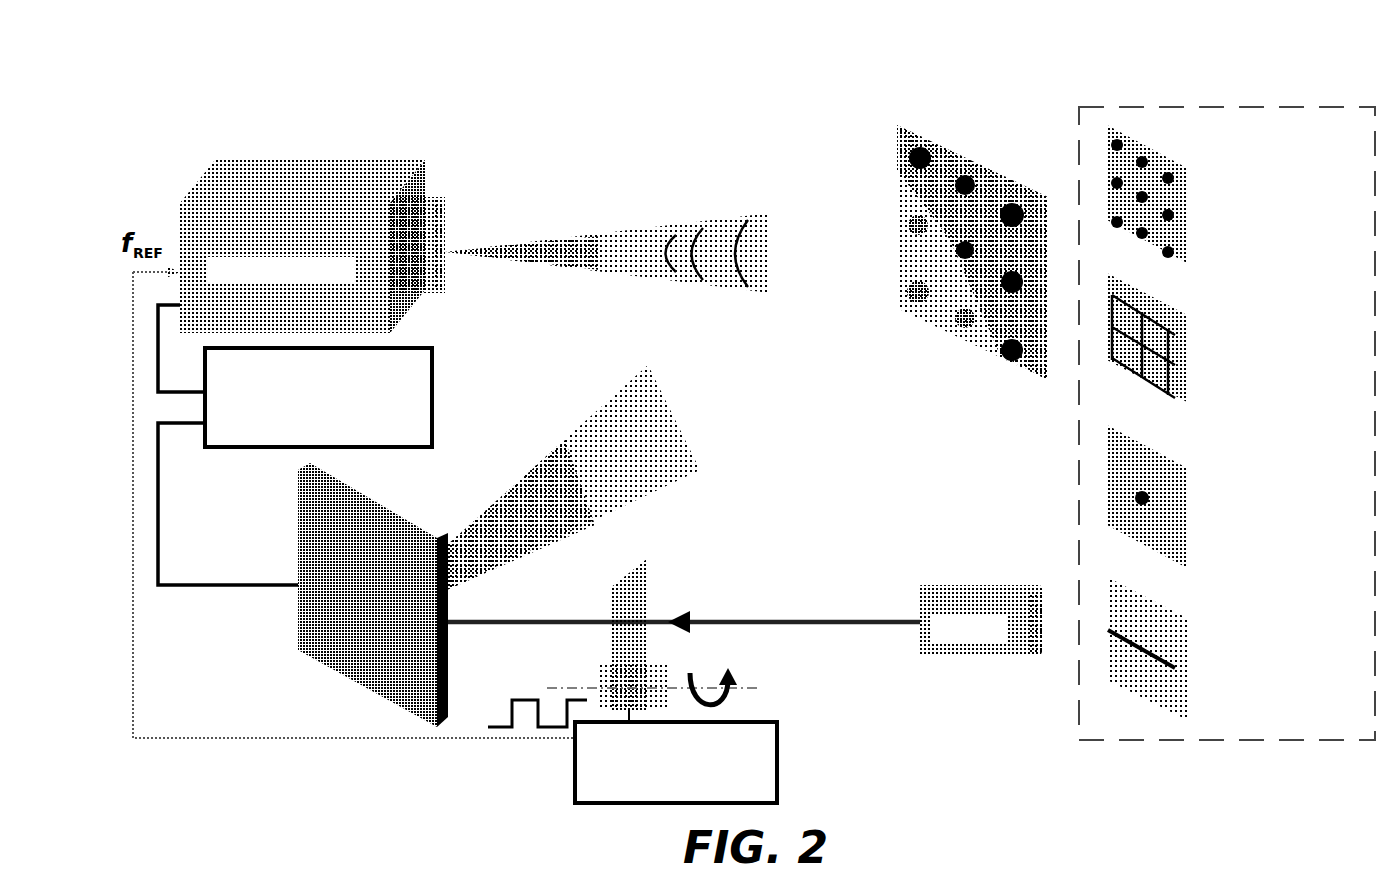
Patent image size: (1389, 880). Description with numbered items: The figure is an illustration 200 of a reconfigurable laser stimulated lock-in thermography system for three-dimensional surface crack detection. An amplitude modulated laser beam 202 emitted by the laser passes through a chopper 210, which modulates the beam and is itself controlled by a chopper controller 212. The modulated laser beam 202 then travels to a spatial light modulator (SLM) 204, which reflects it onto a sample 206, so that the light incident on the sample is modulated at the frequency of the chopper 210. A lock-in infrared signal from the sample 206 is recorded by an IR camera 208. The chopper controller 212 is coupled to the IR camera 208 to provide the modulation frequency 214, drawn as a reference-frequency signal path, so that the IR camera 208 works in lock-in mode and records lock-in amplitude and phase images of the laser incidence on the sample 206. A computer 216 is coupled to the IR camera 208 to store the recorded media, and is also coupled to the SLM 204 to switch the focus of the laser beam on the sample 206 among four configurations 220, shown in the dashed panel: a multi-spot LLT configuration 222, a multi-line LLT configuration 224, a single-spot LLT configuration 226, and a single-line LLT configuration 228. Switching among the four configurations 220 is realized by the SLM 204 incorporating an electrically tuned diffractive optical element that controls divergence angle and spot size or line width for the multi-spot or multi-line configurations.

The illustration 200 is at (985, 807).
The amplitude modulated laser beam 202 is at (802, 613).
The spatial light modulator (SLM) 204 is at (387, 506).
The sample 206 is at (923, 133).
The IR camera 208 is at (307, 157).
The chopper 210 is at (633, 563).
The chopper controller 212 is at (777, 740).
The modulation frequency 214 is at (133, 685).
The computer 216 is at (432, 363).
The four configurations 220 is at (1217, 105).
The multi-spot LLT configuration 222 is at (1175, 158).
The multi-line LLT configuration 224 is at (1183, 310).
The single-spot LLT configuration 226 is at (1175, 463).
The single-line LLT configuration 228 is at (1175, 613).